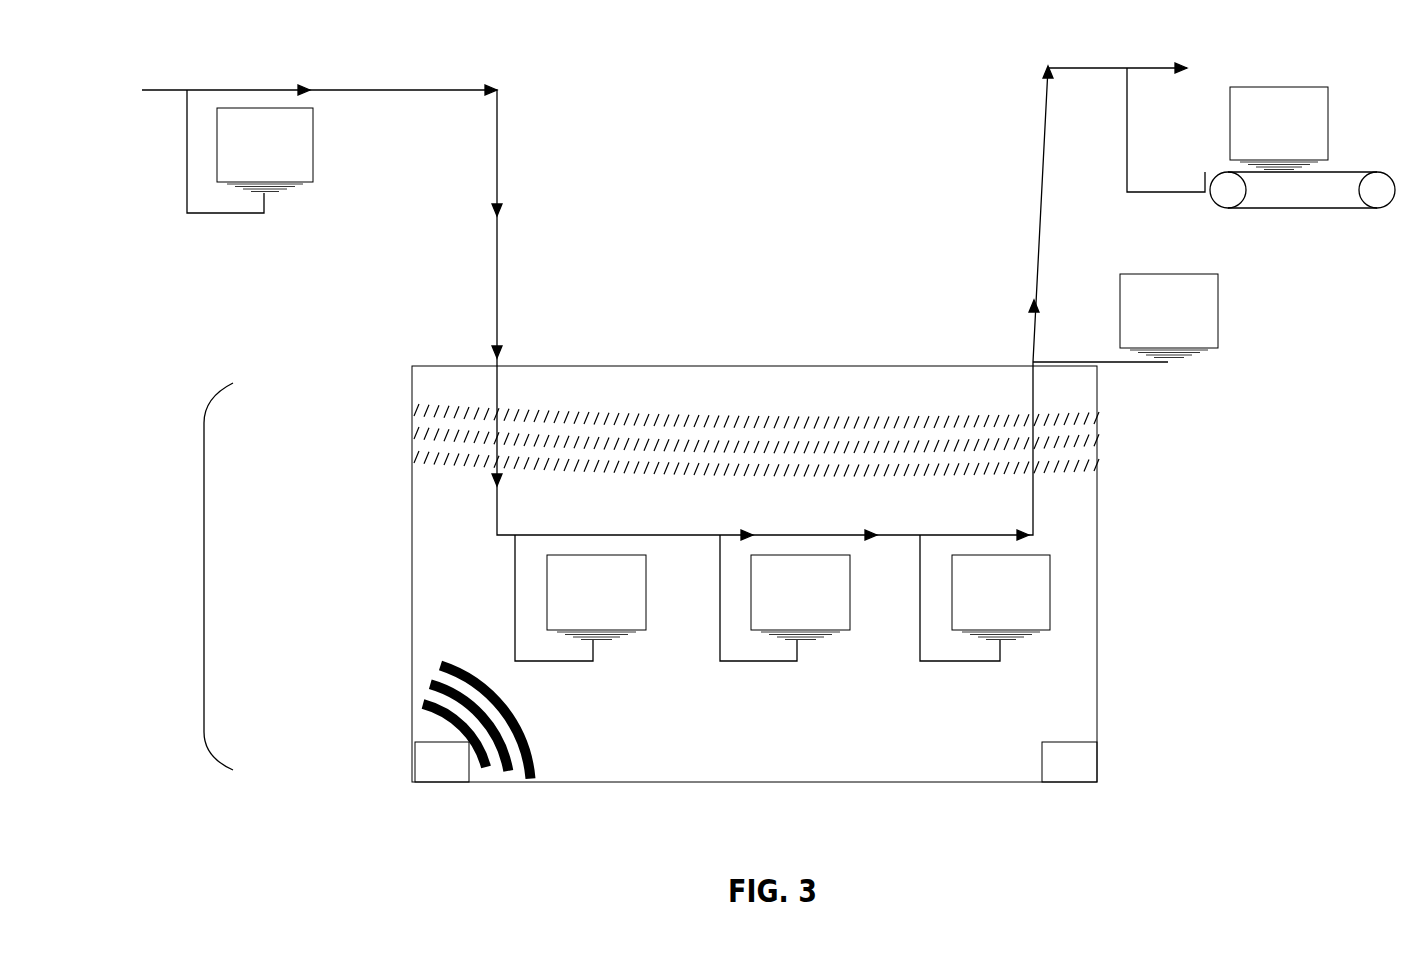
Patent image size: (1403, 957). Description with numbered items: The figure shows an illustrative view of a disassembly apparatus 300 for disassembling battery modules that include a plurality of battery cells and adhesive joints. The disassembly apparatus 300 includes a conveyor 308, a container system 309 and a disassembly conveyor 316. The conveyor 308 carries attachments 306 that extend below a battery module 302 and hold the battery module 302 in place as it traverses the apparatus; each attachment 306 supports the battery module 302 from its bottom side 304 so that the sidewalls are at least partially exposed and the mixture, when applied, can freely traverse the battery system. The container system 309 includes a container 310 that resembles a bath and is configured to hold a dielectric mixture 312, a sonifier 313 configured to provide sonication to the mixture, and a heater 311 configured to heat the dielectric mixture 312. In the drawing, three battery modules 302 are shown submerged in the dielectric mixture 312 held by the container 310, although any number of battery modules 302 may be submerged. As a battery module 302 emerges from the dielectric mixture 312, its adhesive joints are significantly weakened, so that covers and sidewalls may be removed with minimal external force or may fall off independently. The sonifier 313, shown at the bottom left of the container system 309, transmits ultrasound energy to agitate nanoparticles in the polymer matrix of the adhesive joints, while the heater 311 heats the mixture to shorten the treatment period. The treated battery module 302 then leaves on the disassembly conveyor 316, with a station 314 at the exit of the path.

The disassembly apparatus 300 is at (773, 47).
The battery module 302 is at (772, 363).
The bottom side 304 is at (282, 190).
The attachment 306 is at (183, 197).
The conveyor 308 is at (345, 89).
The container system 309 is at (204, 577).
The container 310 is at (404, 398).
The heater 311 is at (1043, 773).
The dielectric mixture 312 is at (423, 557).
The sonifier 313 is at (423, 742).
The output station 314 is at (1230, 120).
The disassembly conveyor 316 is at (1322, 212).